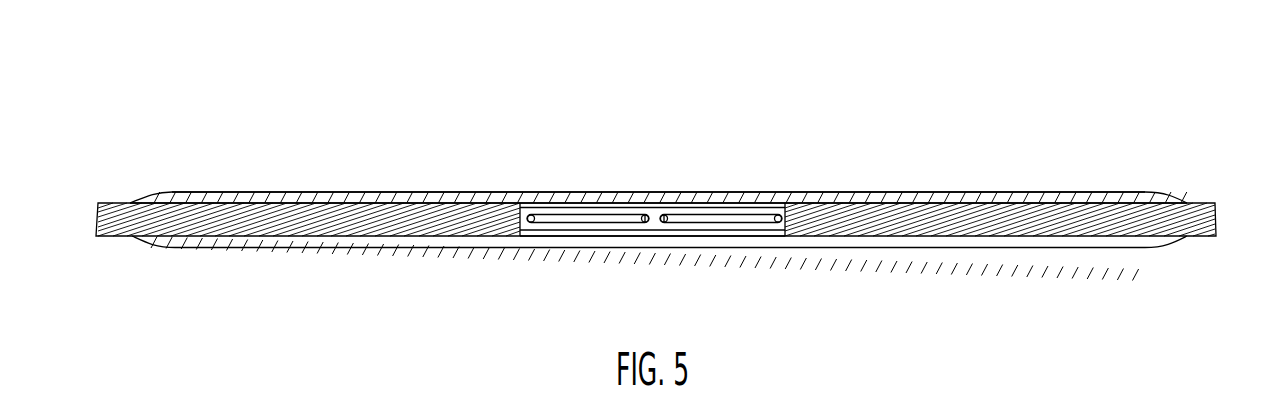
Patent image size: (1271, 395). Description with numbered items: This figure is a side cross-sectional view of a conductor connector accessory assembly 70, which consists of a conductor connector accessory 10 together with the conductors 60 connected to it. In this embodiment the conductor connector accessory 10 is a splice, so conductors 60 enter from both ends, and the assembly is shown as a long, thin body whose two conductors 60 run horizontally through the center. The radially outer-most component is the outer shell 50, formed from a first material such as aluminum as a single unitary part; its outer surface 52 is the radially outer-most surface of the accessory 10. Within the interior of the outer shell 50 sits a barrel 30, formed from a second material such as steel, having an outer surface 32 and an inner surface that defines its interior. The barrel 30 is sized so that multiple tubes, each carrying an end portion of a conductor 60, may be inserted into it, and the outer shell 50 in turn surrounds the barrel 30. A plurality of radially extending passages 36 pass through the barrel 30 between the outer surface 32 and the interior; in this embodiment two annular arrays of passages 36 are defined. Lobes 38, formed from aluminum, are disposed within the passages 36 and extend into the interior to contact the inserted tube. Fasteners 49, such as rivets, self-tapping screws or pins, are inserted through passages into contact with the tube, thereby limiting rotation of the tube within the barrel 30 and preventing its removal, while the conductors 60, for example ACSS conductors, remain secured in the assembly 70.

The conductor connector accessory 10 is at (657, 179).
The barrel 30 is at (750, 191).
The outer surface 32 is at (785, 191).
The passages 36 is at (554, 229).
The lobes 38 is at (604, 224).
The fasteners 49 is at (641, 207).
The outer shell 50 is at (532, 189).
The outer surface 52 is at (421, 191).
The conductor 60 is at (381, 230).
The conductor connector accessory assembly 70 is at (1116, 122).